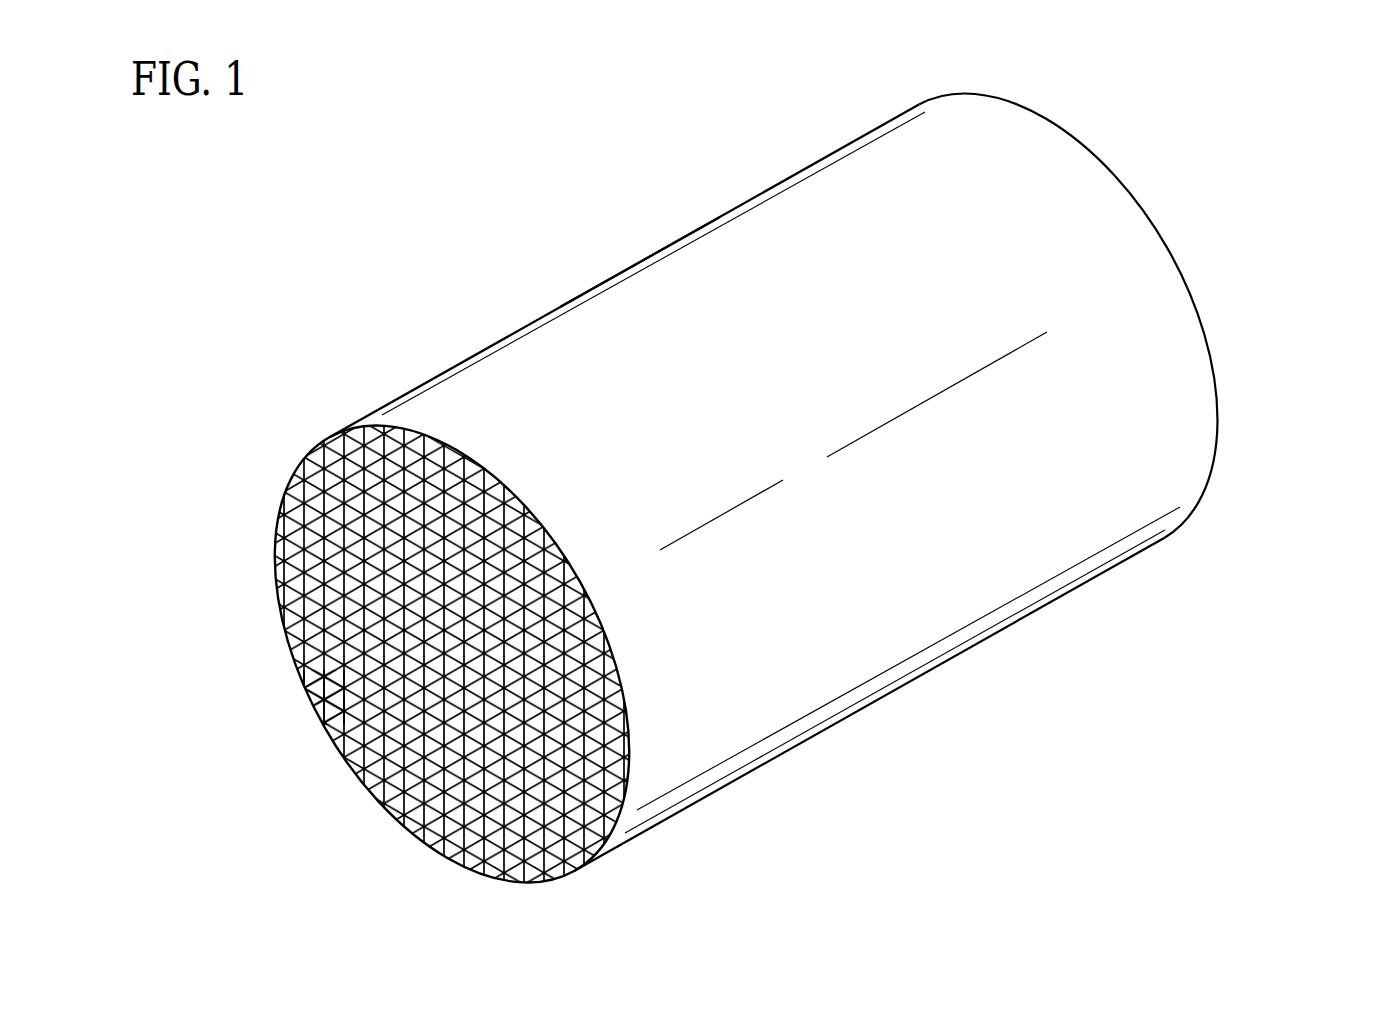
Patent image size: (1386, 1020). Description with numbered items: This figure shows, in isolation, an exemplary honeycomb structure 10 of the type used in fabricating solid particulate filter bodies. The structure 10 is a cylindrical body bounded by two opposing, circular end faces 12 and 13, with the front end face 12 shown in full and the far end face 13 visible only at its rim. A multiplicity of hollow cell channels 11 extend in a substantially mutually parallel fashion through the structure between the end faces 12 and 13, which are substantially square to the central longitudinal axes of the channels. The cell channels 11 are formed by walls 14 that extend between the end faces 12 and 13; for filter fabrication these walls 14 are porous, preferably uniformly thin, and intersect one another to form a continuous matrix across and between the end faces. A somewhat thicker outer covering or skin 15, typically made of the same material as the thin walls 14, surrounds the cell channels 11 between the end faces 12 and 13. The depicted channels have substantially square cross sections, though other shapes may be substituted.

The honeycomb structure 10 is at (1222, 430).
The hollow cell channels 11 is at (330, 615).
The end face 12 is at (285, 512).
The end face 13 is at (1095, 148).
The walls 14 is at (338, 682).
The outer covering or skin 15 is at (677, 303).